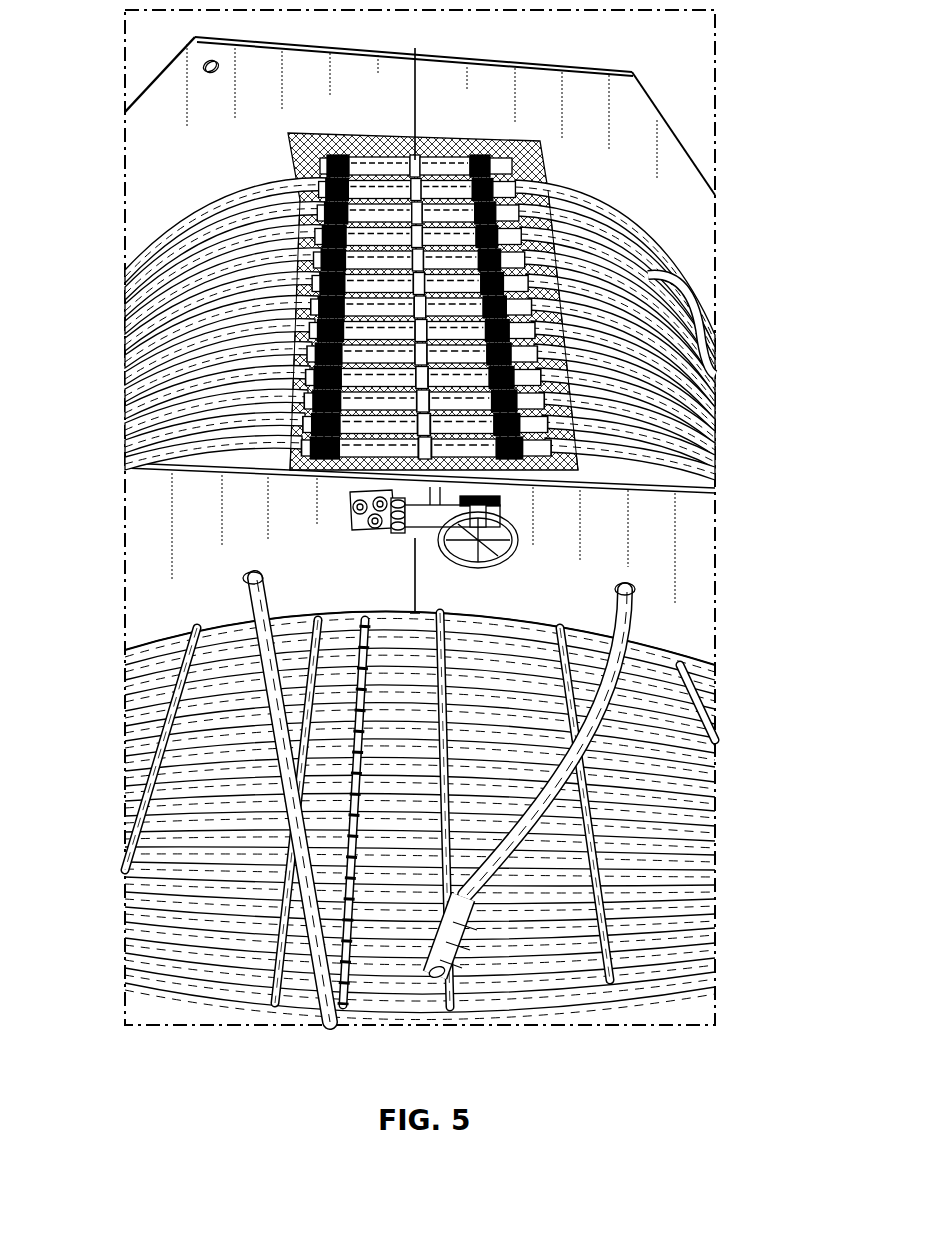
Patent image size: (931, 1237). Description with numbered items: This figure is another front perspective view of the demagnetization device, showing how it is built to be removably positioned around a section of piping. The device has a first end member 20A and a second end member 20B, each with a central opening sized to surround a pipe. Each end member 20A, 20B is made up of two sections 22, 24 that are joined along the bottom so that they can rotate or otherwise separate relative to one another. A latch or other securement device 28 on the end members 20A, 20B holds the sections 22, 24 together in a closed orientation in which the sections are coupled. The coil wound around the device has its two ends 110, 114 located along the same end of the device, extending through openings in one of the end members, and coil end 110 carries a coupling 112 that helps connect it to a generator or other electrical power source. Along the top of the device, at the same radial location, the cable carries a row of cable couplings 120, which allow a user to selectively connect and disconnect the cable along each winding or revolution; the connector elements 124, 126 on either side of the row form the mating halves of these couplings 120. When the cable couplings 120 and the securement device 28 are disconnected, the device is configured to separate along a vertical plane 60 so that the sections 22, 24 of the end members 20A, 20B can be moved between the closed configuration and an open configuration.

The first end member 20A is at (718, 591).
The second end member 20B is at (677, 96).
The section of end member 22 is at (667, 190).
The section of end member 24 is at (153, 107).
The securement device 28 is at (513, 525).
The vertical plane 60 is at (417, 107).
The coil end 110 is at (563, 730).
The coupling 112 is at (437, 985).
The coil end 114 is at (277, 770).
The cable couplings 120 is at (318, 196).
The left connectors 124 is at (345, 268).
The right connectors 126 is at (455, 240).